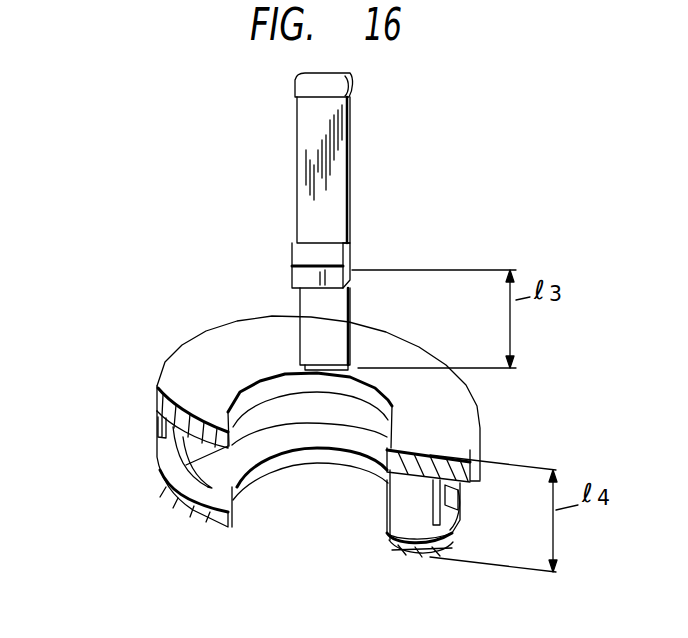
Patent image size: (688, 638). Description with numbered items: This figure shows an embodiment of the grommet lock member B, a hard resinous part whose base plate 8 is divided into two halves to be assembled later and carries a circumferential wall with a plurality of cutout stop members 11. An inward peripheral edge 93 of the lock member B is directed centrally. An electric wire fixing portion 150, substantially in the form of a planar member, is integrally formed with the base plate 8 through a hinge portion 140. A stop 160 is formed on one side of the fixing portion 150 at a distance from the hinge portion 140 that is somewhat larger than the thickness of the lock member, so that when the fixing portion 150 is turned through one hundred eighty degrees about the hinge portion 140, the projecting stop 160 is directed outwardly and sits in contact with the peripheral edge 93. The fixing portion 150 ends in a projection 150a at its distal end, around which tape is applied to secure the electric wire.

The base plate 8 is at (470, 436).
The cutout stop member 11 is at (162, 456).
The inward peripheral edge 93 is at (402, 549).
The hinge portion 140 is at (315, 362).
The electric wire fixing portion 150 is at (343, 157).
The projection 150a is at (295, 80).
The stop 160 is at (310, 253).
The lock member B is at (482, 392).